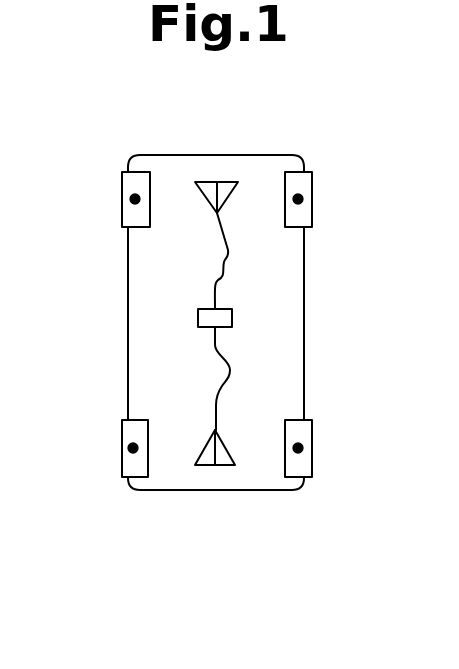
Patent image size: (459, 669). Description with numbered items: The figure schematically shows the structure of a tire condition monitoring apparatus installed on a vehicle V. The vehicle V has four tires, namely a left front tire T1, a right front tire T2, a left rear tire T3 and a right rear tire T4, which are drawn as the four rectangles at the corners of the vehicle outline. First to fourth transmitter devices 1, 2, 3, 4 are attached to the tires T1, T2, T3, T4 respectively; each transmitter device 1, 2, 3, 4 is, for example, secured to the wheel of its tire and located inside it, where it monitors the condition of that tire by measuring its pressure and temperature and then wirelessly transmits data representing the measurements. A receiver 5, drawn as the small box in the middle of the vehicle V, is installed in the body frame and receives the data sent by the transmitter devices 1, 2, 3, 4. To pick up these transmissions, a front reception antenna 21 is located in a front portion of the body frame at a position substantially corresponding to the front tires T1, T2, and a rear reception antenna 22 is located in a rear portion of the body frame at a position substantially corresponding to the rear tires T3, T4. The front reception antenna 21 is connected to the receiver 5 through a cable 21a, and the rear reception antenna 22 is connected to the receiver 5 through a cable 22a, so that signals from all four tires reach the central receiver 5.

The vehicle V is at (304, 322).
The left, front tire T1 is at (122, 180).
The right, front tire T2 is at (312, 180).
The left, rear tire T3 is at (122, 460).
The right, rear tire T4 is at (312, 460).
The first transmitter device 1 is at (135, 199).
The second transmitter device 2 is at (298, 199).
The third transmitter device 3 is at (133, 448).
The fourth transmitter device 4 is at (298, 448).
The receiver 5 is at (232, 317).
The front reception antenna 21 is at (222, 181).
The cable 21a is at (228, 250).
The rear reception antenna 22 is at (225, 465).
The cable 22a is at (229, 372).